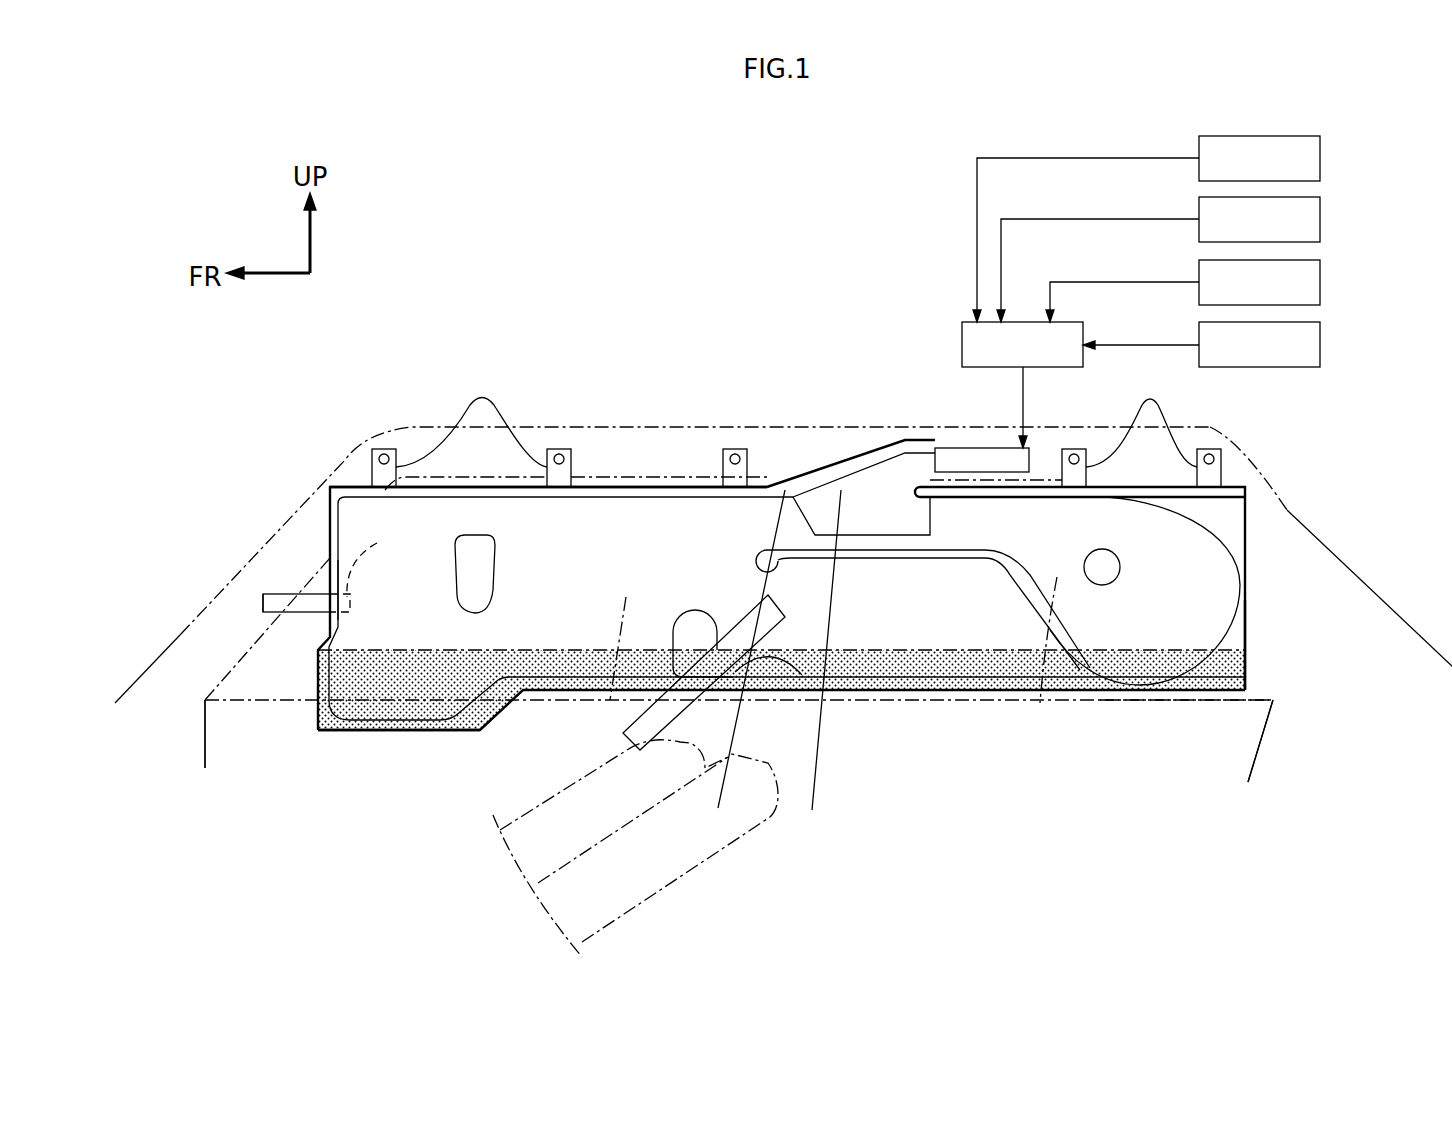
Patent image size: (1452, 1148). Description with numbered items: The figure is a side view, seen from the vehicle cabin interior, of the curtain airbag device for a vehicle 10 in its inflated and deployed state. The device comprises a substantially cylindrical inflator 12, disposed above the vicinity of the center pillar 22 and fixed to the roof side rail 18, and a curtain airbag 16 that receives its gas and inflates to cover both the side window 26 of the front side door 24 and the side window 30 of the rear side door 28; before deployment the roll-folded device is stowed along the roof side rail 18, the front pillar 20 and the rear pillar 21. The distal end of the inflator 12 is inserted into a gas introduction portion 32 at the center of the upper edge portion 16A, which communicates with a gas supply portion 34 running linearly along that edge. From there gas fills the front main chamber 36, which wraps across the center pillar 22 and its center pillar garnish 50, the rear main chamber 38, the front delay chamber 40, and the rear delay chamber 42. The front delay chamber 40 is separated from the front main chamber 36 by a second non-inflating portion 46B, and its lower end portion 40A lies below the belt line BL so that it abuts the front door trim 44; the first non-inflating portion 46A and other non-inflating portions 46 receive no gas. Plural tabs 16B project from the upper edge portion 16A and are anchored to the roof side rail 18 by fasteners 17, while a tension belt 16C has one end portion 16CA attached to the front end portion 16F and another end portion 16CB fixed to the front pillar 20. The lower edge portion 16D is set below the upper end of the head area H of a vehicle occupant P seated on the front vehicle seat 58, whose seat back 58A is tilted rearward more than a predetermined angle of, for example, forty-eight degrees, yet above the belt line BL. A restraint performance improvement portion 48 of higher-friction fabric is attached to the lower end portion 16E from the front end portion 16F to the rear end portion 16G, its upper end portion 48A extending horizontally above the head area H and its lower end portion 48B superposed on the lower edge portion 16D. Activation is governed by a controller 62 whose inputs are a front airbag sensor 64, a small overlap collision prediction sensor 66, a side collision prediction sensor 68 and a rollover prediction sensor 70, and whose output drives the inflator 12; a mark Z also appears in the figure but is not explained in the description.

The curtain airbag device for a vehicle 10 is at (546, 330).
The inflator 12 is at (963, 453).
The curtain airbag 16 is at (786, 584).
The upper edge portion 16A is at (635, 487).
The tabs 16B is at (752, 387).
The tension belt 16C is at (288, 578).
The one end portion of tension belt 16CA is at (382, 564).
The another end portion of tension belt 16CB is at (263, 600).
The lower edge portion 16D is at (930, 695).
The lower end portion 16E is at (1220, 690).
The front end portion 16F is at (330, 582).
The rear end portion 16G is at (1247, 592).
The fasteners 17 is at (384, 459).
The roof side rail 18 is at (700, 433).
The front pillar 20 is at (297, 527).
The rear pillar 21 is at (1283, 517).
The center pillar 22 is at (827, 617).
The side door at front seat 24 is at (233, 693).
The side window of front side door 26 is at (250, 667).
The side door at rear seat 28 is at (1257, 693).
The side window of rear side door 30 is at (1260, 680).
The gas introduction portion 32 is at (903, 455).
The gas supply portion 34 is at (785, 505).
The front main chamber 36 is at (650, 600).
The rear main chamber 38 is at (1105, 615).
The front delay chamber 40 is at (375, 575).
The lower end portion of front delay chamber 40A is at (395, 730).
The rear delay chamber 42 is at (960, 633).
The front door trim 44 is at (255, 720).
The non-inflating portions 46 is at (942, 591).
The first non-inflating portion 46A is at (1238, 552).
The second non-inflating portion 46B is at (493, 570).
The restraint performance improvement portion 48 is at (634, 694).
The upper end portion of restraint performance improvement portion 48A is at (493, 650).
The lower end portion of restraint performance improvement portion 48B is at (445, 730).
The center pillar garnish 50 is at (815, 637).
The front vehicle seat 58 is at (649, 776).
The seat back 58A is at (687, 870).
The controller 62 is at (962, 343).
The front airbag sensor 64 is at (1320, 156).
The small overlap collision prediction sensor 66 is at (1320, 220).
The side collision prediction sensor 68 is at (1320, 284).
The rollover prediction sensor 70 is at (1320, 346).
The belt line BL is at (839, 625).
The head area H is at (785, 643).
The vehicle occupant P is at (545, 798).
The ground reference Z is at (310, 740).